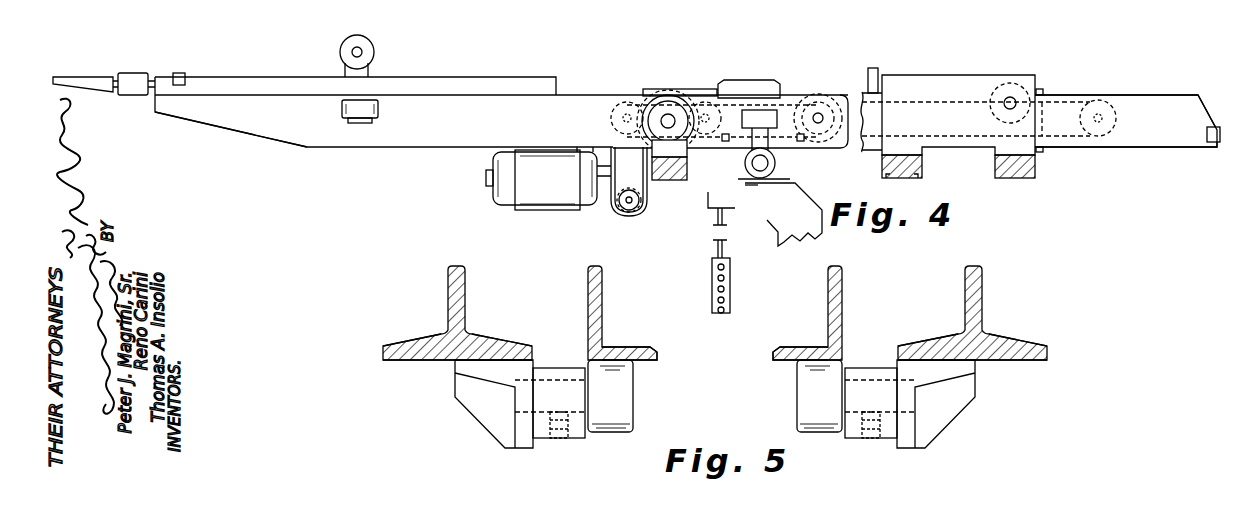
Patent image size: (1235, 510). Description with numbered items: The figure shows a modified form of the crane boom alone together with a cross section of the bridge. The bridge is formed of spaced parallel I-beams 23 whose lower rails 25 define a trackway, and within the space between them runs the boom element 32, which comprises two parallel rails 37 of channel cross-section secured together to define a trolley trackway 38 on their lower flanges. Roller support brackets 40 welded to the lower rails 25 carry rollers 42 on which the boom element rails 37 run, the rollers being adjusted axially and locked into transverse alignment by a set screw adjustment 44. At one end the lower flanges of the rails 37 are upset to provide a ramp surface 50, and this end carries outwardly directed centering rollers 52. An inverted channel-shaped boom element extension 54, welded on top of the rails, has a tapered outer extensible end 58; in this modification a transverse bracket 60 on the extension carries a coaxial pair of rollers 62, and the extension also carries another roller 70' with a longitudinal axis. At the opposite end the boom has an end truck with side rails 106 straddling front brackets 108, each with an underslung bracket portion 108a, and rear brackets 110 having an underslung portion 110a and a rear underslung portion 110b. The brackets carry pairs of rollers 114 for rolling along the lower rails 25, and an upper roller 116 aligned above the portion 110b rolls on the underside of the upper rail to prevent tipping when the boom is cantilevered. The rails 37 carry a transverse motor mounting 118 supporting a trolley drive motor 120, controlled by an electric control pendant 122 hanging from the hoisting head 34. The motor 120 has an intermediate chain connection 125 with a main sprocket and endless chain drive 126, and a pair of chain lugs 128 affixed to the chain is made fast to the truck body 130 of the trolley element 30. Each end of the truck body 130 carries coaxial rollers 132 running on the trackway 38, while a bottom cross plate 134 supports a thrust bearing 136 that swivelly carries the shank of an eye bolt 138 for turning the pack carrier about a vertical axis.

In FIG. 5, the I-beams 23 is at (447, 281).
In FIG. 5, the lower rails 25 is at (425, 360).
In FIG. 4, the trolley element 30 is at (823, 100).
In FIG. 4, the boom element 32 is at (173, 150).
In FIG. 5, the boom element 32 is at (883, 290).
In FIG. 4, the hoisting head 34 is at (821, 231).
In FIG. 4, the boom element rails 37 is at (1131, 144).
In FIG. 5, the boom element rails 37 is at (588, 281).
In FIG. 5, the trolley trackway 38 is at (637, 346).
In FIG. 5, the roller support brackets 40 is at (575, 440).
In FIG. 5, the rollers 42 is at (634, 388).
In FIG. 5, the set screw adjustment 44 is at (869, 440).
In FIG. 4, the ramp surface 50 is at (229, 122).
In FIG. 4, the centering rollers 52 is at (344, 117).
In FIG. 4, the boom element extension 54 is at (434, 77).
In FIG. 4, the tapered outer extensible end 58 is at (88, 76).
In FIG. 4, the bracket 60 is at (344, 70).
In FIG. 4, the rollers 62 is at (341, 44).
In FIG. 4, the coupling 70' is at (151, 64).
In FIG. 4, the side rails 106 is at (662, 88).
In FIG. 4, the brackets 108 is at (684, 148).
In FIG. 4, the underslung bracket portion 108a is at (673, 181).
In FIG. 4, the brackets 110 is at (960, 75).
In FIG. 4, the underslung portion 110a is at (921, 166).
In FIG. 4, the underslung portion 110b is at (1033, 166).
In FIG. 4, the rollers 114 is at (641, 99).
In FIG. 4, the upper roller 116 is at (1015, 88).
In FIG. 4, the motor mounting 118 is at (565, 148).
In FIG. 4, the trolley drive motor 120 is at (557, 208).
In FIG. 4, the electric control pendant 122 is at (711, 285).
In FIG. 4, the intermediate chain connection 125 is at (618, 210).
In FIG. 4, the main sprocket and endless chain drive 126 is at (1094, 104).
In FIG. 4, the chain lugs 128 is at (799, 146).
In FIG. 4, the truck body 130 is at (782, 82).
In FIG. 4, the rollers 132 is at (712, 100).
In FIG. 4, the bottom cross plate 134 is at (773, 150).
In FIG. 4, the thrust bearing 136 is at (723, 134).
In FIG. 4, the eye bolt 138 is at (795, 209).